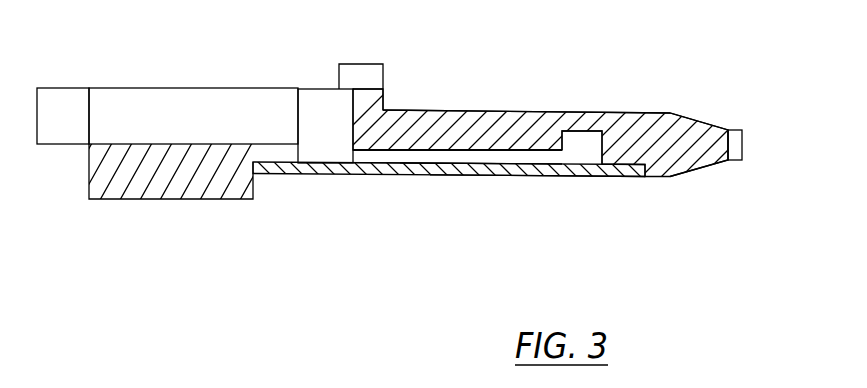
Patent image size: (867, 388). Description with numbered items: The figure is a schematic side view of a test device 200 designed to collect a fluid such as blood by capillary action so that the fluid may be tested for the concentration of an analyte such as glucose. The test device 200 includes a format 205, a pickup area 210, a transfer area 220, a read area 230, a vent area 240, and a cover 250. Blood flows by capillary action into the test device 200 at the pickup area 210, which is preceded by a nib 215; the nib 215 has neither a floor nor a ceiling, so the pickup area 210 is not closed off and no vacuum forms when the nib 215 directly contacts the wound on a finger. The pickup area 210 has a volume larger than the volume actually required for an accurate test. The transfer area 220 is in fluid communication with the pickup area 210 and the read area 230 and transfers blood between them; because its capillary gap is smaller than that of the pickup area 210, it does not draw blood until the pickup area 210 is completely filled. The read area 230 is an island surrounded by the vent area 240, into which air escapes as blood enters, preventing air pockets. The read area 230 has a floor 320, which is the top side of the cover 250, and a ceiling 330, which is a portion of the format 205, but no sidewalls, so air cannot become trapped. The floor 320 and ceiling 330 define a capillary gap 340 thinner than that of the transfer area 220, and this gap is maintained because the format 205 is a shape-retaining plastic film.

The test device 200 is at (565, 102).
The format 205 is at (706, 184).
The pickup area 210 is at (179, 108).
The nib 215 is at (60, 157).
The transfer area 220 is at (340, 162).
The read area 230 is at (511, 94).
The vent area 240 is at (586, 192).
The cover 250 is at (449, 213).
The floor 320 is at (537, 222).
The ceiling 330 is at (457, 100).
The capillary gap 340 is at (450, 206).